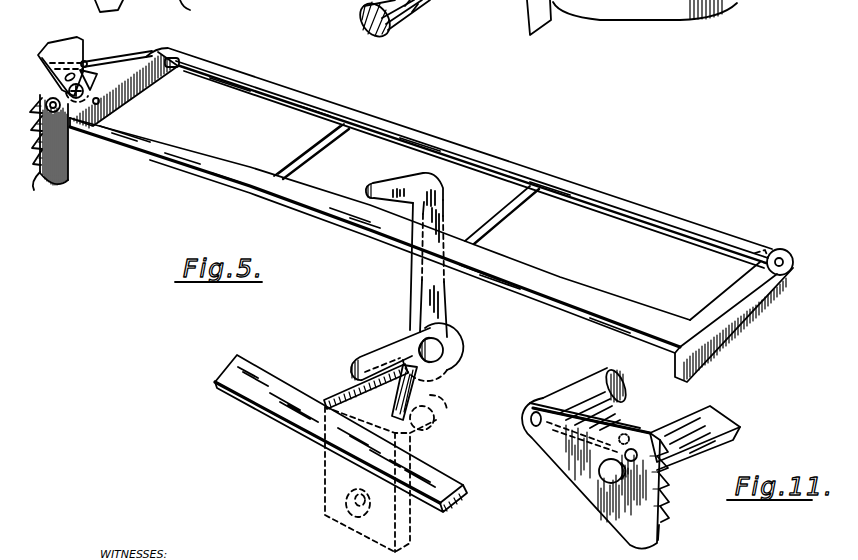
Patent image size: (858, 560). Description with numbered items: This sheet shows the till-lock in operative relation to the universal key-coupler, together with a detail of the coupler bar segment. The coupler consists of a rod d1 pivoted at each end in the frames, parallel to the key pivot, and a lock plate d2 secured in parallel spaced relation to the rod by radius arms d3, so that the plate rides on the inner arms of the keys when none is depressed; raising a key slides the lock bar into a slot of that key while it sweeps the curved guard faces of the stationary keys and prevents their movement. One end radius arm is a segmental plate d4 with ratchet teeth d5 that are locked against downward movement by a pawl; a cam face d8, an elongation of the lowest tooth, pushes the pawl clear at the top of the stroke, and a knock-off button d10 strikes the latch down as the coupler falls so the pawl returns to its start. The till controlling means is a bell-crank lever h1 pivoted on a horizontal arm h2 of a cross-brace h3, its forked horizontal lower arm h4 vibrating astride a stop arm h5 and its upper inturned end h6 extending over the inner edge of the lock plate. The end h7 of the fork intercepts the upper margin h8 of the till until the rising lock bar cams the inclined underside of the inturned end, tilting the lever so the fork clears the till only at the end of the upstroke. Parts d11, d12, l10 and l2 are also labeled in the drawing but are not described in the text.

In FIG. 5, the rod d1 is at (610, 193).
In FIG. 11, the rod d1 is at (567, 392).
In FIG. 5, the lock plate d2 is at (168, 148).
In FIG. 11, the lock plate d2 is at (735, 440).
In FIG. 5, the radius arms d3 is at (302, 168).
In FIG. 5, the segmental plate d4 is at (70, 127).
In FIG. 11, the segmental plate d4 is at (607, 518).
In FIG. 5, the ratchet teeth d5 is at (40, 108).
In FIG. 11, the ratchet teeth d5 is at (664, 508).
In FIG. 5, the cam face d8 is at (32, 182).
In FIG. 11, the cam face d8 is at (662, 536).
In FIG. 5, the knock-off button d10 is at (100, 102).
In FIG. 11, the knock-off button d10 is at (607, 475).
In FIG. 5, the arm plate d11 is at (58, 50).
In FIG. 5, the connecting rod d12 is at (100, 72).
In FIG. 5, the bell-crank lever h1 is at (440, 298).
In FIG. 5, the horizontal arm h2 is at (398, 330).
In FIG. 5, the cross-brace h3 is at (435, 474).
In FIG. 5, the forked horizontal lower arm h4 is at (403, 353).
In FIG. 5, the stop arm h5 is at (334, 398).
In FIG. 5, the upper inturned end h6 is at (376, 184).
In FIG. 5, the end of the lower fork arm h7 is at (437, 426).
In FIG. 5, the upper margin of the till h8 is at (428, 405).
In FIG. 5, the partial part l10 is at (204, 24).
In FIG. 5, the rod l2 is at (398, 24).